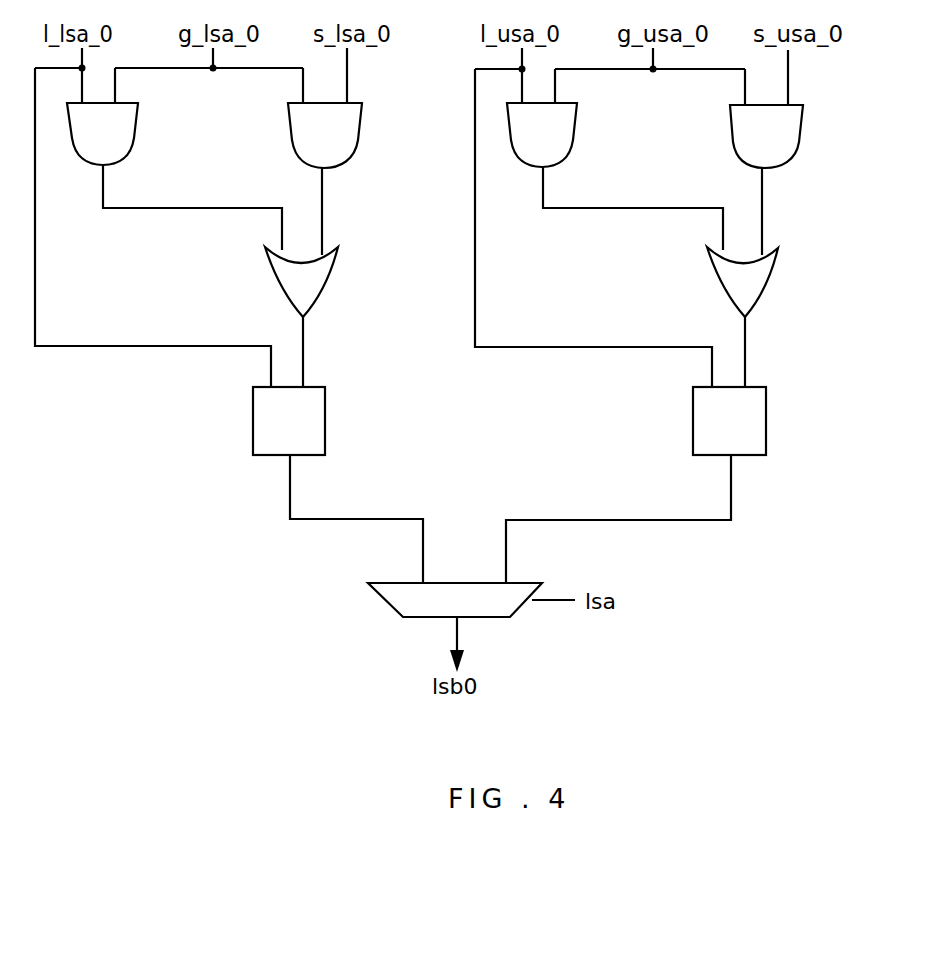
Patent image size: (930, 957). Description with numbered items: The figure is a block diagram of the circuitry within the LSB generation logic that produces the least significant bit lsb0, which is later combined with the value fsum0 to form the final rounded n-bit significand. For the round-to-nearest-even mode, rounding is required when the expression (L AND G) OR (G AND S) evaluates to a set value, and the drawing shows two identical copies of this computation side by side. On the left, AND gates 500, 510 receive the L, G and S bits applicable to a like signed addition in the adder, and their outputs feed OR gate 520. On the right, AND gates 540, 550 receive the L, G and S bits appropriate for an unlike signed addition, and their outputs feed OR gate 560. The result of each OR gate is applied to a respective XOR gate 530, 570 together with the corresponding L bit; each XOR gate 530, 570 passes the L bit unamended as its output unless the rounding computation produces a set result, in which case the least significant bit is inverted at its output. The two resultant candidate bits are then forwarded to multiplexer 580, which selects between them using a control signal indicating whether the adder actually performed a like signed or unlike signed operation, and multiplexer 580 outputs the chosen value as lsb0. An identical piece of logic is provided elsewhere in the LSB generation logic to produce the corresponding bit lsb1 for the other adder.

The AND gate 500 is at (133, 143).
The AND gate 510 is at (361, 146).
The OR gate 520 is at (326, 288).
The XOR gate 530 is at (325, 427).
The AND gate 540 is at (573, 156).
The AND gate 550 is at (797, 152).
The OR gate 560 is at (766, 281).
The XOR gate 570 is at (768, 423).
The multiplexer 580 is at (519, 617).